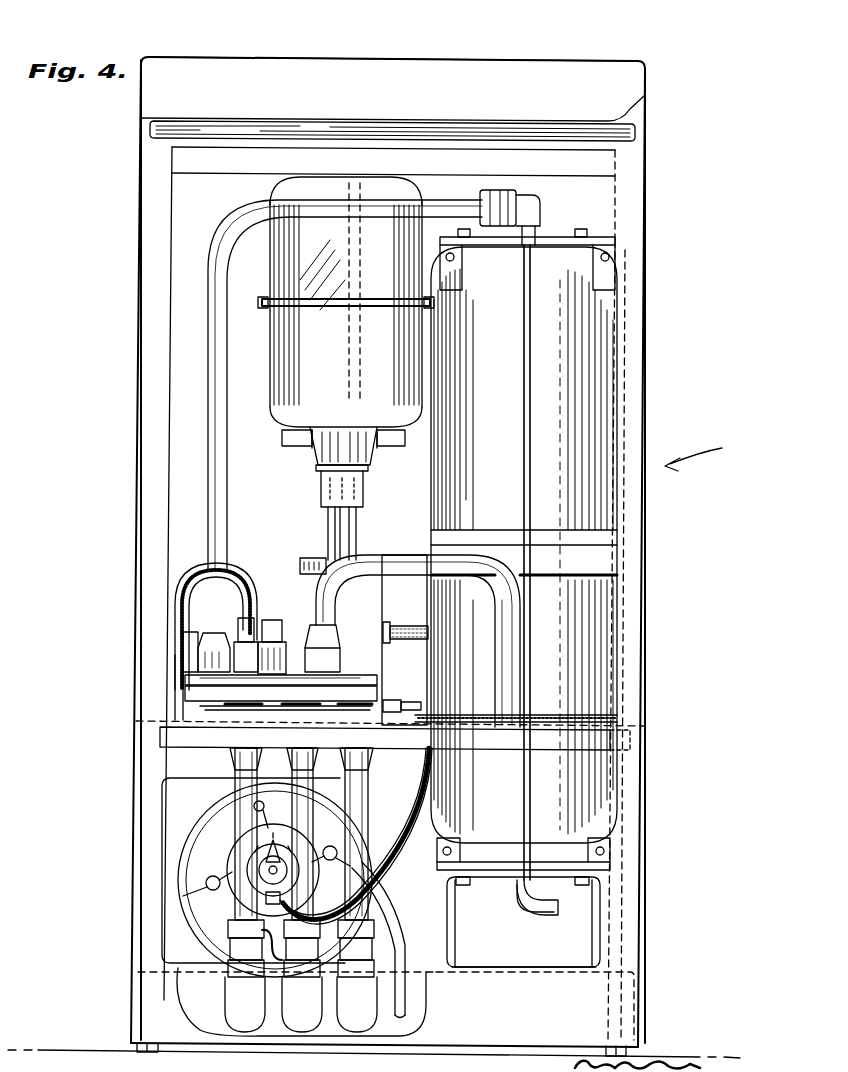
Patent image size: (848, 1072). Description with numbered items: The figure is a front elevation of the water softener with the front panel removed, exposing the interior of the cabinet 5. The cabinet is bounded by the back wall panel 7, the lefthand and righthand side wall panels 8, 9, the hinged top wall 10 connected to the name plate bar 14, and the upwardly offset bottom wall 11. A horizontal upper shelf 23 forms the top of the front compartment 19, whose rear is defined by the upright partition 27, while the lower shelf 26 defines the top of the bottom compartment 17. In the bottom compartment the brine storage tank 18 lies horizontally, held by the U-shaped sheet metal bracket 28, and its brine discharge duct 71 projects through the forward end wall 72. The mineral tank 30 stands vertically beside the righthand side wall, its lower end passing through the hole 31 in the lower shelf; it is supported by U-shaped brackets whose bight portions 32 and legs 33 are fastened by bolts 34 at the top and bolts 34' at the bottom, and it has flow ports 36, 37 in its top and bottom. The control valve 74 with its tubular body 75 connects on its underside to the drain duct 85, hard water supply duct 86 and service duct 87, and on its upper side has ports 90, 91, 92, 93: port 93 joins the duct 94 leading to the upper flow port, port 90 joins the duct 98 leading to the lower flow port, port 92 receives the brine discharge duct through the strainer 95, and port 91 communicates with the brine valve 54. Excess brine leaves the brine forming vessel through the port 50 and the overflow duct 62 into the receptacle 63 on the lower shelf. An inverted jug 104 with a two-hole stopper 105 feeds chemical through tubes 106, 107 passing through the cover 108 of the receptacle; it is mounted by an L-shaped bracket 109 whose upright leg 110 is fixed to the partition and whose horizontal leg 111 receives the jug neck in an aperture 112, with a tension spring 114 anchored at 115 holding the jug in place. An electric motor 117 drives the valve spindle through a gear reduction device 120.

The cabinet 5 is at (696, 452).
The back wall panel 7 is at (416, 892).
The lefthand side wall panel 8 is at (139, 460).
The righthand side wall panel 9 is at (646, 398).
The top wall 10 is at (622, 120).
The bottom wall 11 is at (424, 960).
The name plate bar 14 is at (578, 78).
The bottom compartment 17 is at (590, 925).
The brine storage tank 18 is at (185, 856).
The front compartment 19 is at (168, 522).
The upper shelf 23 is at (274, 142).
The lower shelf 26 is at (590, 712).
The partition 27 is at (188, 224).
The U-shaped sheet metal bracket 28 is at (212, 786).
The mineral tank 30 is at (595, 352).
The hole 31 is at (640, 733).
The bight portion 32 is at (526, 966).
The legs 33 is at (442, 262).
The bolts 34 is at (526, 525).
The bolts 34' is at (523, 900).
The flow port 36 is at (542, 222).
The flow port 37 is at (543, 888).
The port 50 is at (430, 656).
The brine valve 54 is at (212, 650).
The overflow duct 62 is at (412, 628).
The receptacle 63 is at (304, 580).
The brine discharge duct 71 is at (418, 822).
The forward end wall 72 is at (200, 840).
The control valve 74 is at (185, 684).
The tubular body 75 is at (290, 740).
The drain duct 85 is at (370, 784).
The hard water supply duct 86 is at (300, 790).
The service duct 87 is at (242, 812).
The port 90 is at (318, 630).
The port 91 is at (282, 628).
The port 92 is at (252, 620).
The port 93 is at (195, 652).
The duct 94 is at (224, 355).
The strainer 95 is at (215, 640).
The duct 98 is at (408, 558).
The jug 104 is at (292, 230).
The two-hole stopper 105 is at (364, 492).
The tube 106 is at (327, 520).
The tube 107 is at (357, 520).
The cover 108 is at (326, 552).
The L-shaped bracket 109 is at (305, 452).
The upright leg 110 is at (312, 450).
The horizontal leg 111 is at (284, 434).
The aperture 112 is at (386, 446).
The tension spring 114 is at (298, 302).
The anchor points 115 is at (264, 296).
The electric motor 117 is at (215, 678).
The gear reduction device 120 is at (176, 700).